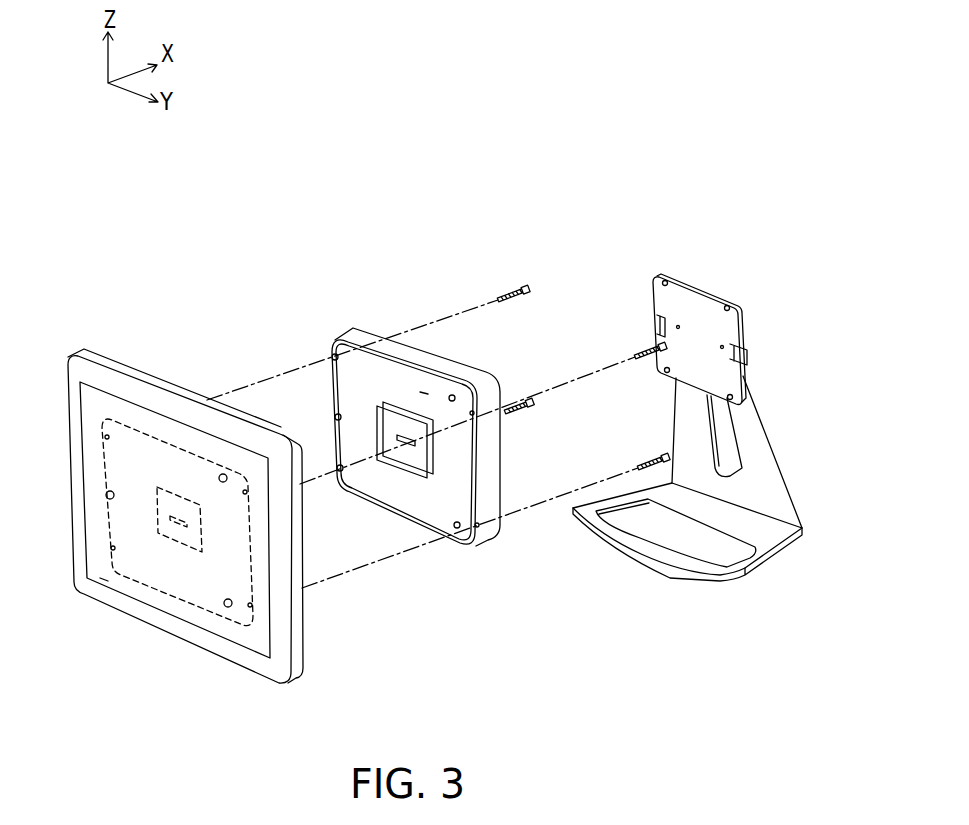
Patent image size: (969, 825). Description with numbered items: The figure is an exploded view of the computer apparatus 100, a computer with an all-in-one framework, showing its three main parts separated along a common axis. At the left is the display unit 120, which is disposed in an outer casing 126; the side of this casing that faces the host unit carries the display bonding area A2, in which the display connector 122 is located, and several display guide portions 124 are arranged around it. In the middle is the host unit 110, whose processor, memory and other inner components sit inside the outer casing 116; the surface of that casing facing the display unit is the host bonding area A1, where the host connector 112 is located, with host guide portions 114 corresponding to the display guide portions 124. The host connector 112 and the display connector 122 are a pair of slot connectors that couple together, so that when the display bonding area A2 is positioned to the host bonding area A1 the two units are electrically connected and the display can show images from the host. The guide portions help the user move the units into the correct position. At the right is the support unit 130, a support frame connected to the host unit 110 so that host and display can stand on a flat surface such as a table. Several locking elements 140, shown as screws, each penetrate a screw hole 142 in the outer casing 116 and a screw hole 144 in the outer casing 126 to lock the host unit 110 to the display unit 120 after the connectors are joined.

The computer apparatus 100 is at (764, 689).
The host unit 110 is at (342, 262).
The host connector 112 is at (408, 440).
The host guide portion 114 is at (455, 522).
The outer casing 116 is at (370, 338).
The display unit 120 is at (75, 302).
The display connector 122 is at (173, 514).
The display guide portion 124 is at (230, 598).
The outer casing 126 is at (148, 382).
The support unit 130 is at (752, 433).
The locking element 140 is at (505, 290).
The screw hole 142 is at (477, 528).
The screw hole 144 is at (105, 436).
The host bonding area A1 is at (424, 390).
The display bonding area A2 is at (153, 588).